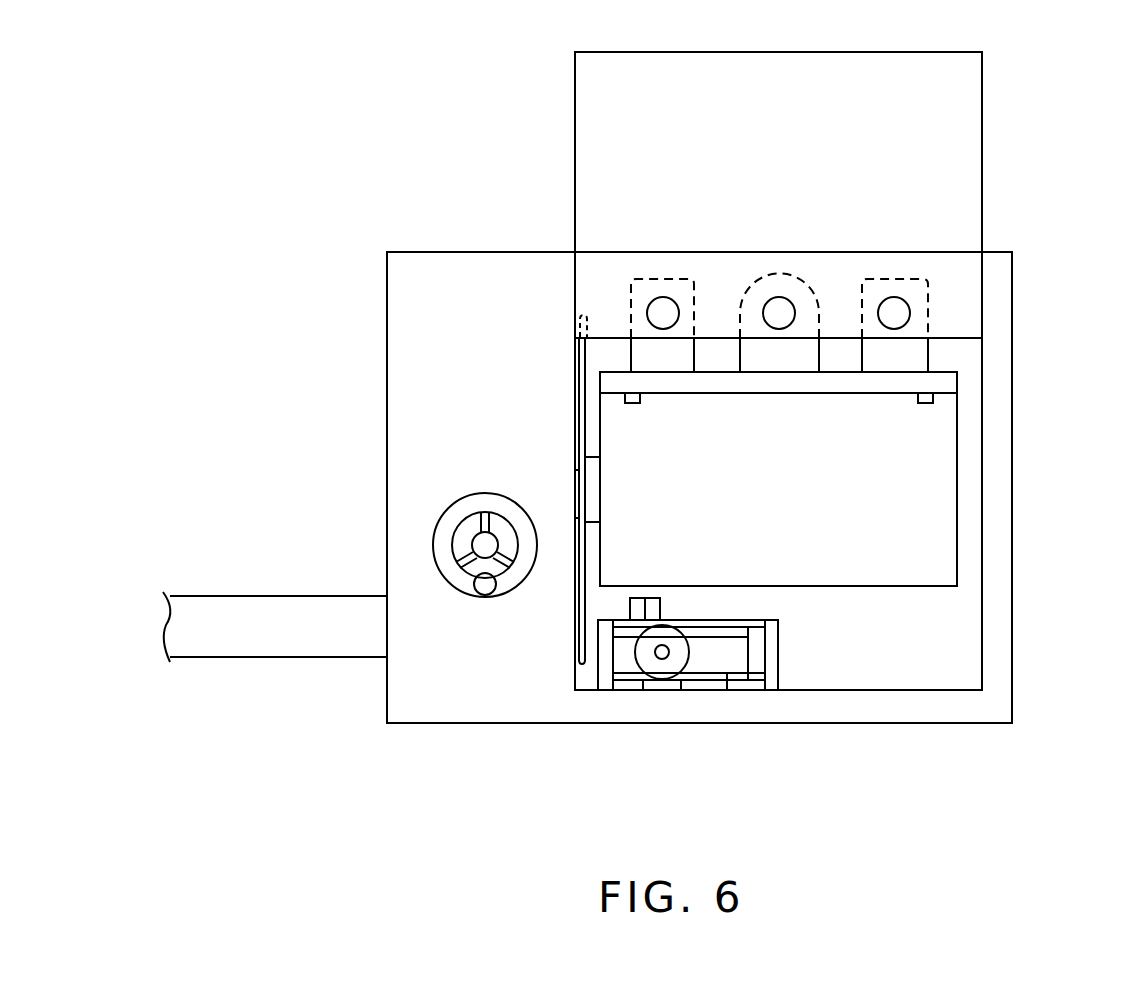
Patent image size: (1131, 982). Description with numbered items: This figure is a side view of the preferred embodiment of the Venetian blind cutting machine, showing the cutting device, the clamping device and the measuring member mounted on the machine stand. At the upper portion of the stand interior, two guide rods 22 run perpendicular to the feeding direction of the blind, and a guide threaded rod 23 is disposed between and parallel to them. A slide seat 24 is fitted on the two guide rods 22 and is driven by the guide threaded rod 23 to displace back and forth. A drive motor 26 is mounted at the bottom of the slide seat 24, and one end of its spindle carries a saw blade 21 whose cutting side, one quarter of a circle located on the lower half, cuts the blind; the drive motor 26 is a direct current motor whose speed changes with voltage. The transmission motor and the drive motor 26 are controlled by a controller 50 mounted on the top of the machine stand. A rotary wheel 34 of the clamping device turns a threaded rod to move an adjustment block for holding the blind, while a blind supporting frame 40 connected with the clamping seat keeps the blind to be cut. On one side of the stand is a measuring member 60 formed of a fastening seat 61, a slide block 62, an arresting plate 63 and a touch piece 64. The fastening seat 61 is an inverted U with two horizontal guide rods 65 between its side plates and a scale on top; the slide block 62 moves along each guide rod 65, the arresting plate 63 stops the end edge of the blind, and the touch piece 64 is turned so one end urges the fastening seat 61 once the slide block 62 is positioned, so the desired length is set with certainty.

The controller 50 is at (949, 140).
The guide rods 22 is at (660, 308).
The guide threaded rod 23 is at (790, 298).
The slide seat 24 is at (935, 380).
The drive motor 26 is at (931, 491).
The saw blade 21 is at (578, 407).
The rotary wheel 34 is at (443, 527).
The blind supporting frame 40 is at (246, 627).
The measuring member 60 is at (716, 668).
The fastening seat 61 is at (775, 648).
The slide block 62 is at (664, 741).
The arresting plate 63 is at (637, 605).
The touch piece 64 is at (667, 628).
The guide rods 65 is at (748, 680).